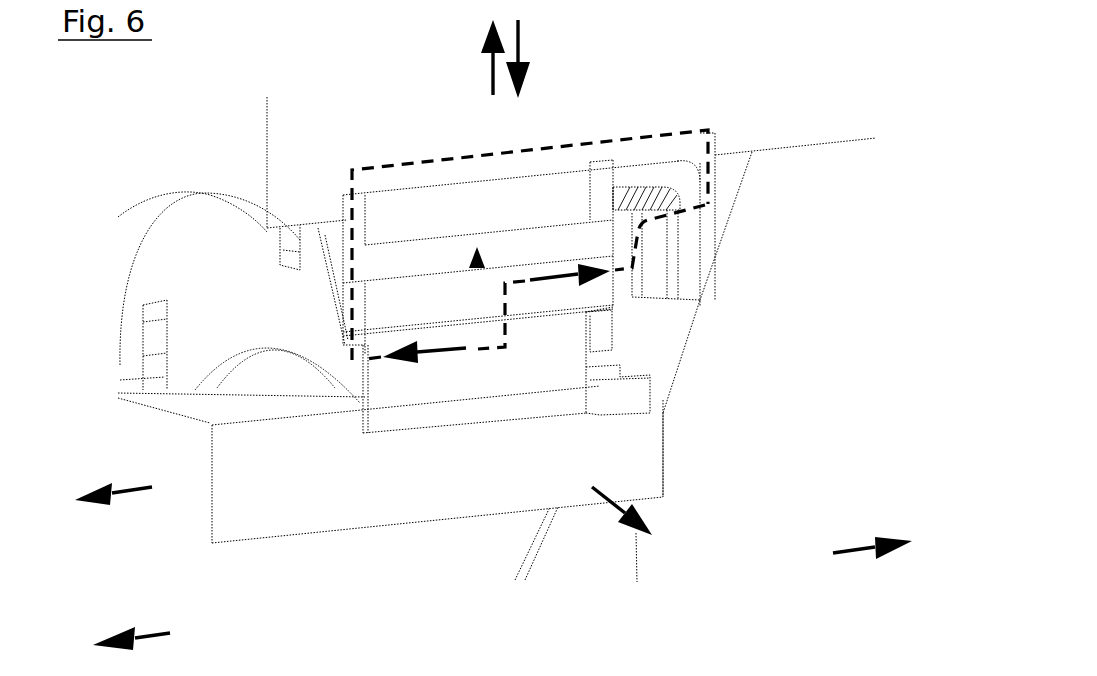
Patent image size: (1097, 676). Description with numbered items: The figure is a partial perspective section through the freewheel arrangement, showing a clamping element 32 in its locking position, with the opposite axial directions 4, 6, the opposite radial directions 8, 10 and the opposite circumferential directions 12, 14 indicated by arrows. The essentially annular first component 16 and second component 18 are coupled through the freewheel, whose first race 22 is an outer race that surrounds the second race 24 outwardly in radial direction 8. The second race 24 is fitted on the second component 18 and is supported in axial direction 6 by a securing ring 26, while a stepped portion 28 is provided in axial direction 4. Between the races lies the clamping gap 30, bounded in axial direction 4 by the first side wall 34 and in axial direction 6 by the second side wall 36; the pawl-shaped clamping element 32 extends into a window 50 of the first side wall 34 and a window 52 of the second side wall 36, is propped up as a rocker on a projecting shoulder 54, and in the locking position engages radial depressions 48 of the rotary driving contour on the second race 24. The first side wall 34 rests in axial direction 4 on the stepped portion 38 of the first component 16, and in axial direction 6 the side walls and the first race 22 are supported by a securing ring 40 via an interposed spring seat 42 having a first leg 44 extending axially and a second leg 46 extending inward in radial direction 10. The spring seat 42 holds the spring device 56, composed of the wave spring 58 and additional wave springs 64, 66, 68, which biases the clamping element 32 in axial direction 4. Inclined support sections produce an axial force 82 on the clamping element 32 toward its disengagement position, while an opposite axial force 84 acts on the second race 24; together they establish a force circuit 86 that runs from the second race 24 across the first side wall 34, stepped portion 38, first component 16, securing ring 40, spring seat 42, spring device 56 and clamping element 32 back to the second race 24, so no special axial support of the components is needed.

The axial direction 4 is at (142, 633).
The axial direction 6 is at (853, 548).
The radial direction 8 is at (493, 66).
The radial direction 10 is at (522, 38).
The circumferential direction 12 is at (130, 488).
The circumferential direction 14 is at (620, 500).
The first component 16 is at (317, 148).
The second component 18 is at (273, 481).
The first race 22 is at (455, 212).
The second race 24 is at (453, 385).
The securing ring 26 is at (597, 400).
The stepped portion 28 is at (388, 418).
The clamping gap 30 is at (478, 267).
The clamping element 32 is at (312, 243).
The first side wall 34 is at (222, 343).
The second side wall 36 is at (607, 332).
The stepped portion 38 is at (332, 210).
The securing ring 40 is at (706, 182).
The spring seat 42 is at (685, 142).
The first leg 44 is at (640, 173).
The second leg 46 is at (690, 248).
The radial depressions 48 is at (383, 333).
The window 50 is at (328, 310).
The window 52 is at (605, 222).
The projecting shoulder 54 is at (315, 283).
The spring device 56 is at (660, 173).
The wave spring 58 is at (637, 275).
The wave spring 64 is at (650, 262).
The wave spring 66 is at (658, 237).
The wave spring 68 is at (670, 223).
The axial force 82 is at (543, 282).
The opposite axial force 84 is at (427, 353).
The force circuit 86 is at (372, 360).